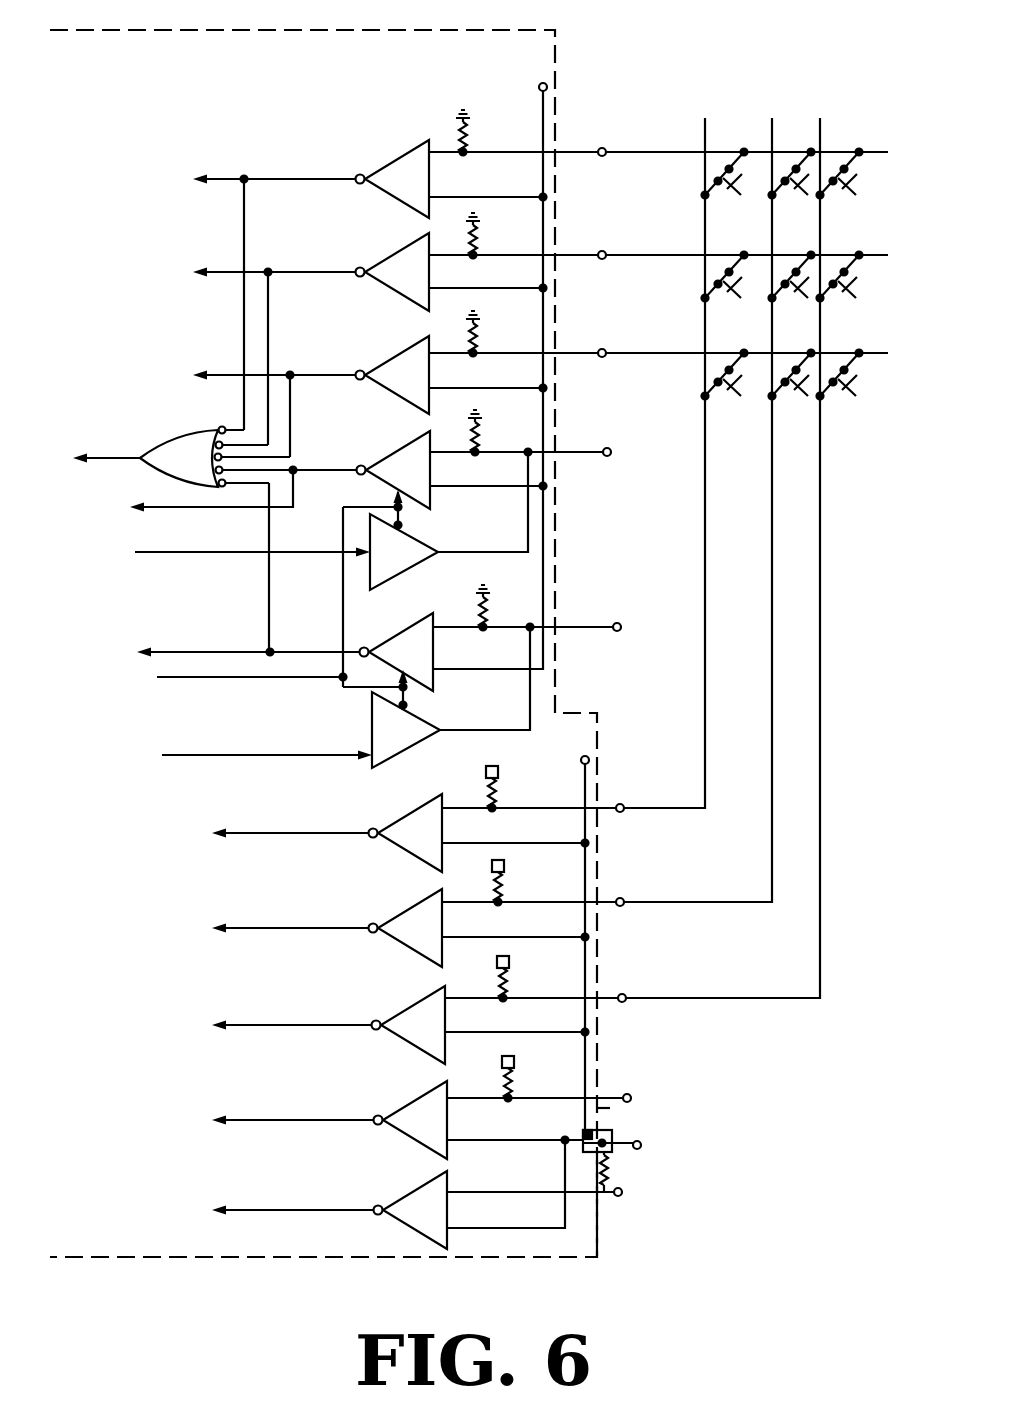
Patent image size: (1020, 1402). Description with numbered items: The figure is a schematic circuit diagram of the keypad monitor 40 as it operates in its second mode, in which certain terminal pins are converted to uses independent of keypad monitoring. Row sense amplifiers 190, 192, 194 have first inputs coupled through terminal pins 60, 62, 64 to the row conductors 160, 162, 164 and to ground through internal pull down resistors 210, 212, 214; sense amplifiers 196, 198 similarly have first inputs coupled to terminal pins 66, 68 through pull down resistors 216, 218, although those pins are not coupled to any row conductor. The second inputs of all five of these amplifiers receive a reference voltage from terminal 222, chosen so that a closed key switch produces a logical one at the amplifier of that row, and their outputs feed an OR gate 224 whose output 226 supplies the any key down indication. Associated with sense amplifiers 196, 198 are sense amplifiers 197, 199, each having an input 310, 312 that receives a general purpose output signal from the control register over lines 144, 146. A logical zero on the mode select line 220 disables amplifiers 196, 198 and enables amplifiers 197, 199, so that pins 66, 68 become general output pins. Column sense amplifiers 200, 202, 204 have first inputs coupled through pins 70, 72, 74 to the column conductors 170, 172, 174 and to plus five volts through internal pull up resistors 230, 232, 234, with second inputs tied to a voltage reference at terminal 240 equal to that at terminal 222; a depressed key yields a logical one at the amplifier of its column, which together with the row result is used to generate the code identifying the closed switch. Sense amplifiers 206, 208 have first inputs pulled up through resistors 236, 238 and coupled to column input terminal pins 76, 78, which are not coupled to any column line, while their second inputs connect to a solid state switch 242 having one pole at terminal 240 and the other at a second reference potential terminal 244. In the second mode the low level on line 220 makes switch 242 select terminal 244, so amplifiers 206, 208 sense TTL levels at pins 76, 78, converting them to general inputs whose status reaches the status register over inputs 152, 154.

The keypad monitor 40 is at (176, 91).
The terminal pin 60 is at (605, 150).
The terminal pin 62 is at (605, 253).
The terminal pin 64 is at (605, 351).
The terminal pin 66 is at (610, 456).
The terminal pin 68 is at (620, 631).
The terminal pin 70 is at (622, 812).
The terminal pin 72 is at (622, 906).
The terminal pin 74 is at (624, 1002).
The column input terminal pin 76 is at (630, 1102).
The column input terminal pin 78 is at (620, 1196).
The line 144 is at (190, 550).
The line 146 is at (208, 755).
The input 152 is at (292, 1208).
The input 154 is at (292, 1118).
The row conductor 160 is at (706, 152).
The row conductor 162 is at (706, 255).
The row conductor 164 is at (706, 353).
The column conductor 170 is at (708, 512).
The column conductor 172 is at (778, 525).
The column conductor 174 is at (823, 566).
The sense amplifier 190 is at (412, 160).
The sense amplifier 192 is at (412, 254).
The sense amplifier 194 is at (412, 356).
The sense amplifier 196 is at (427, 445).
The sense amplifier 197 is at (407, 548).
The sense amplifier 198 is at (422, 635).
The sense amplifier 199 is at (412, 728).
The sense amplifier 200 is at (427, 818).
The sense amplifier 202 is at (427, 913).
The sense amplifier 204 is at (429, 1010).
The sense amplifier 206 is at (432, 1100).
The sense amplifier 208 is at (436, 1192).
The pull down resistor 210 is at (472, 138).
The pull down resistor 212 is at (482, 242).
The pull down resistor 214 is at (482, 337).
The pull down resistor 216 is at (484, 431).
The pull down resistor 218 is at (490, 604).
The mode select line 220 is at (178, 680).
The terminal 222 is at (540, 84).
The OR gate 224 is at (210, 432).
The output 226 is at (140, 455).
The pull up resistor 230 is at (500, 800).
The pull up resistor 232 is at (508, 893).
The pull up resistor 234 is at (512, 985).
The pull up resistor 236 is at (518, 1082).
The pull up resistor 238 is at (592, 1178).
The terminal 240 is at (581, 763).
The switch 242 is at (620, 1128).
The reference potential terminal 244 is at (612, 1156).
The input 310 is at (366, 570).
The input 312 is at (366, 770).